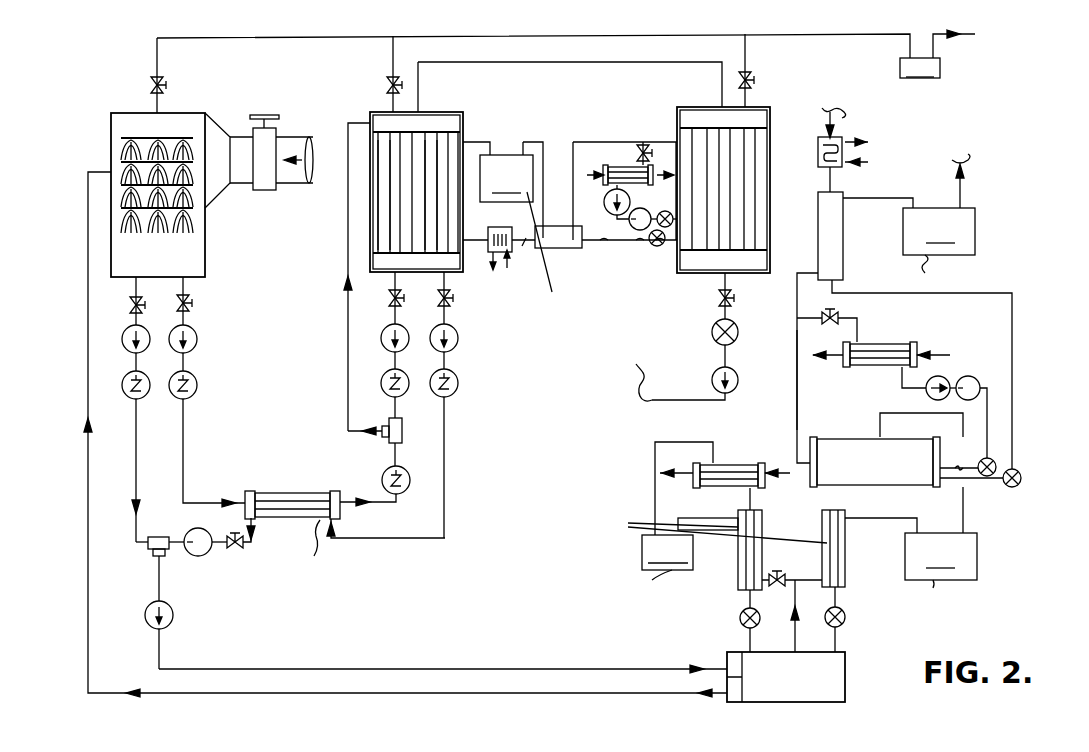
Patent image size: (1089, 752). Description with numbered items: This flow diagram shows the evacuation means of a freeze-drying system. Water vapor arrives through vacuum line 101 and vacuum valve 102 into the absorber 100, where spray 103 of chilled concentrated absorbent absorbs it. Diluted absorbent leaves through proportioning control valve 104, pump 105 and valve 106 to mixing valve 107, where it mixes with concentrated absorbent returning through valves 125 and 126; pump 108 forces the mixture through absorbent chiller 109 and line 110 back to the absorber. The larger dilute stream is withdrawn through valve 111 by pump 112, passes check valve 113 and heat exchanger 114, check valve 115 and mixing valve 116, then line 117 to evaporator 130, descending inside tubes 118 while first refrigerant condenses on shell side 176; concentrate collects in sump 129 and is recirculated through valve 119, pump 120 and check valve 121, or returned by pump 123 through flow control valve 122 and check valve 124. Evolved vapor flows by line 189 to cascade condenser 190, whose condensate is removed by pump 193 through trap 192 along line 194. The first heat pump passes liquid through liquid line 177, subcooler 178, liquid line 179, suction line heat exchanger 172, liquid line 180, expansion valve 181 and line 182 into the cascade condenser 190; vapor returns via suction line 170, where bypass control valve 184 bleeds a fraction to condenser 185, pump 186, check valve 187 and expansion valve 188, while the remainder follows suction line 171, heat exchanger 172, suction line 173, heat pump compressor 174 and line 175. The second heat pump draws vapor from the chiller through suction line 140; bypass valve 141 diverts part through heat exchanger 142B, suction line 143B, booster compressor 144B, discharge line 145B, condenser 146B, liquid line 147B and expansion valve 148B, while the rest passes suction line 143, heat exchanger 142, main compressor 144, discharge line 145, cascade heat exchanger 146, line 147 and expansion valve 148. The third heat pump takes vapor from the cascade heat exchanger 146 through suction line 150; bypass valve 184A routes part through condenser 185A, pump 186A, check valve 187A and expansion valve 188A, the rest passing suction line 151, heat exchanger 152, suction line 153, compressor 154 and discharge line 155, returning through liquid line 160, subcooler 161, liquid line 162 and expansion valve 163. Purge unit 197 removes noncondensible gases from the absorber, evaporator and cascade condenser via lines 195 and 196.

The absorber 100 is at (205, 113).
The vacuum line 101 is at (298, 136).
The vacuum valve 102 is at (262, 114).
The spray 103 is at (140, 222).
The proportioning control valve 104 is at (128, 306).
The pump 105 is at (122, 339).
The valve 106 is at (122, 385).
The mixing valve 107 is at (176, 519).
The pump 108 is at (173, 613).
The absorbent chiller 109 is at (844, 682).
The line 110 is at (88, 471).
The valve 111 is at (193, 306).
The pump 112 is at (197, 340).
The check valve 113 is at (197, 386).
The heat exchanger 114 is at (300, 462).
The check valve 115 is at (382, 478).
The mixing valve 116 is at (402, 431).
The line 117 is at (346, 315).
The tubes 118 is at (393, 198).
The valve 119 is at (390, 304).
The pump 120 is at (381, 348).
The check valve 121 is at (381, 384).
The flow control valve 122 is at (452, 300).
The pump 123 is at (458, 340).
The check valve 124 is at (458, 385).
The valve 125 is at (238, 550).
The valve 126 is at (206, 556).
The evaporator sump 129 is at (422, 260).
The evaporator 130 is at (365, 75).
The suction line 140 is at (797, 633).
The proportioning bypass valve 141 is at (776, 573).
The liquid-vapor suction line heat exchanger 142 is at (822, 534).
The liquid-vapor suction line heat exchanger 142B is at (726, 586).
The suction line 143 is at (873, 518).
The suction line 143B is at (726, 524).
The main compressor 144 is at (966, 569).
The booster compressor 144B is at (612, 563).
The discharge line 145 is at (965, 505).
The discharge line 145B is at (655, 496).
The cascade heat exchanger 146 is at (849, 436).
The condenser 146B is at (752, 448).
The line 147 is at (834, 482).
The liquid line 147B is at (752, 484).
The expansion valve 148 is at (844, 618).
The expansion valve 148B is at (738, 622).
The suction line 150 is at (797, 392).
The suction line 151 is at (797, 309).
The liquid vapor suction line heat exchanger 152 is at (818, 240).
The suction line 153 is at (888, 178).
The compressor 154 is at (978, 248).
The discharge line 155 is at (954, 190).
The liquid line 160 is at (851, 121).
The cooling medium subcooler 161 is at (818, 158).
The liquid line 162 is at (831, 182).
The expansion valve 163 is at (1021, 478).
The suction line 170 is at (676, 140).
The suction line 171 is at (578, 142).
The liquid-vapor suction line heat exchanger 172 is at (570, 250).
The suction line 173 is at (544, 142).
The heat pump compressor 174 is at (562, 237).
The line 175 is at (464, 142).
The shell side 176 is at (430, 212).
The liquid line 177 is at (486, 240).
The subcooler 178 is at (503, 272).
The liquid line 179 is at (524, 246).
The liquid line 180 is at (608, 244).
The expansion valve 181 is at (642, 242).
The line 182 is at (669, 242).
The proportioning bypass control valve 184 is at (644, 144).
The proportioning bypass valve 184A is at (838, 314).
The condenser 185 is at (626, 164).
The condenser 185A is at (918, 344).
The pump 186 is at (604, 220).
The pump 186A is at (926, 391).
The check valve 187 is at (628, 228).
The check valve 187A is at (974, 378).
The expansion valve 188 is at (666, 216).
The expansion valve 188A is at (994, 462).
The line 189 is at (569, 63).
The cascade condenser 190 is at (612, 82).
The trap 192 is at (712, 332).
The pump 193 is at (712, 380).
The line 194 is at (674, 375).
The line 195 is at (156, 67).
The line 196 is at (566, 35).
The purge unit 197 is at (942, 72).